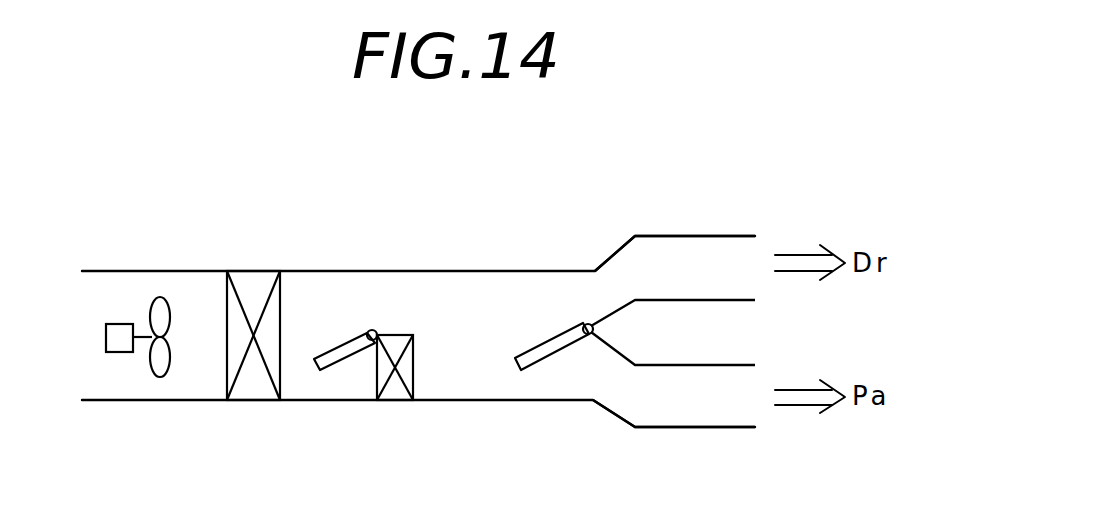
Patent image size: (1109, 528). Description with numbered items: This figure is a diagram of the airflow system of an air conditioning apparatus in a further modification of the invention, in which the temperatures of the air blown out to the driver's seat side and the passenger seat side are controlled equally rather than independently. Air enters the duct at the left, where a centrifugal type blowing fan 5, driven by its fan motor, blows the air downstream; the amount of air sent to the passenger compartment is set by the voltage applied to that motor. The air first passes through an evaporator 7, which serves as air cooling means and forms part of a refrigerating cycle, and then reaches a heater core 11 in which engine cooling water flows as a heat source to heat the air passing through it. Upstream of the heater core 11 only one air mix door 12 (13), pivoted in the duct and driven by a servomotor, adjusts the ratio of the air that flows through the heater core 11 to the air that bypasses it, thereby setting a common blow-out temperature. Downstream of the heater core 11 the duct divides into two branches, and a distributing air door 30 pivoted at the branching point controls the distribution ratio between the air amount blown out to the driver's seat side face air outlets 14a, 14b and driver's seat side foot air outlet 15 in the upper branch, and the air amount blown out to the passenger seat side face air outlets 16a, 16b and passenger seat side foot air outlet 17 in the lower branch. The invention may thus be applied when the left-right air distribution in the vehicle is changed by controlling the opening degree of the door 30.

The blowing fan 5 is at (157, 366).
The evaporator 7 is at (254, 385).
The heater core 11 is at (408, 361).
The air mix door 12 is at (363, 263).
The air mix door 13 is at (338, 342).
The distributing air door 30 is at (563, 343).
The driver's seat side face air outlet 14a is at (681, 240).
The driver's seat side face air outlet 14b is at (673, 281).
The driver's seat side foot air outlet 15 is at (688, 253).
The passenger seat side face air outlet 16a is at (693, 414).
The passenger seat side face air outlet 16b is at (673, 379).
The passenger seat side foot air outlet 17 is at (695, 405).